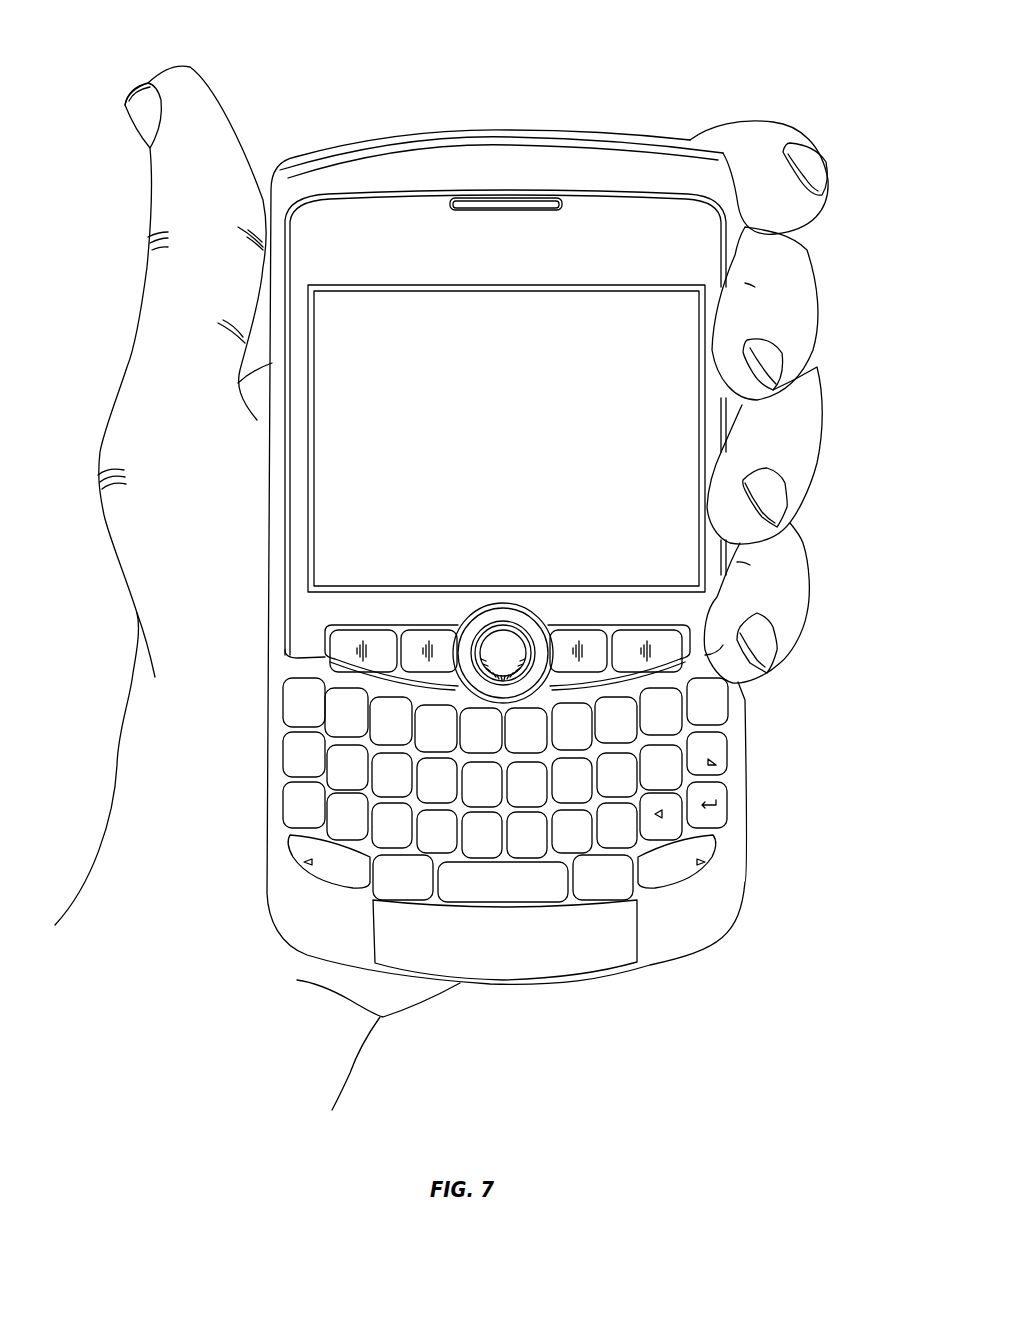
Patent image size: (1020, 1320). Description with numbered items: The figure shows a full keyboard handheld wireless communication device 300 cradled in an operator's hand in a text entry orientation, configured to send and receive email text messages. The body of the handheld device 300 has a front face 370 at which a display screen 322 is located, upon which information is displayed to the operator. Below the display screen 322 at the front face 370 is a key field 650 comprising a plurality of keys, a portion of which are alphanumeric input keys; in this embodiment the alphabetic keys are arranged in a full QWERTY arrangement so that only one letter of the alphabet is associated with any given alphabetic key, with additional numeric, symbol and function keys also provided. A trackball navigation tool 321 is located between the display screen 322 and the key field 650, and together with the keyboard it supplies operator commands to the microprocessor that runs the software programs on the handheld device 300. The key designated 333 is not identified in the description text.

The handheld wireless communication device 300 is at (571, 523).
The display screen 322 is at (473, 323).
The trackball navigation tool 321 is at (528, 694).
The front face 370 is at (733, 802).
The shift key 333 is at (715, 870).
The key field 650 is at (678, 907).